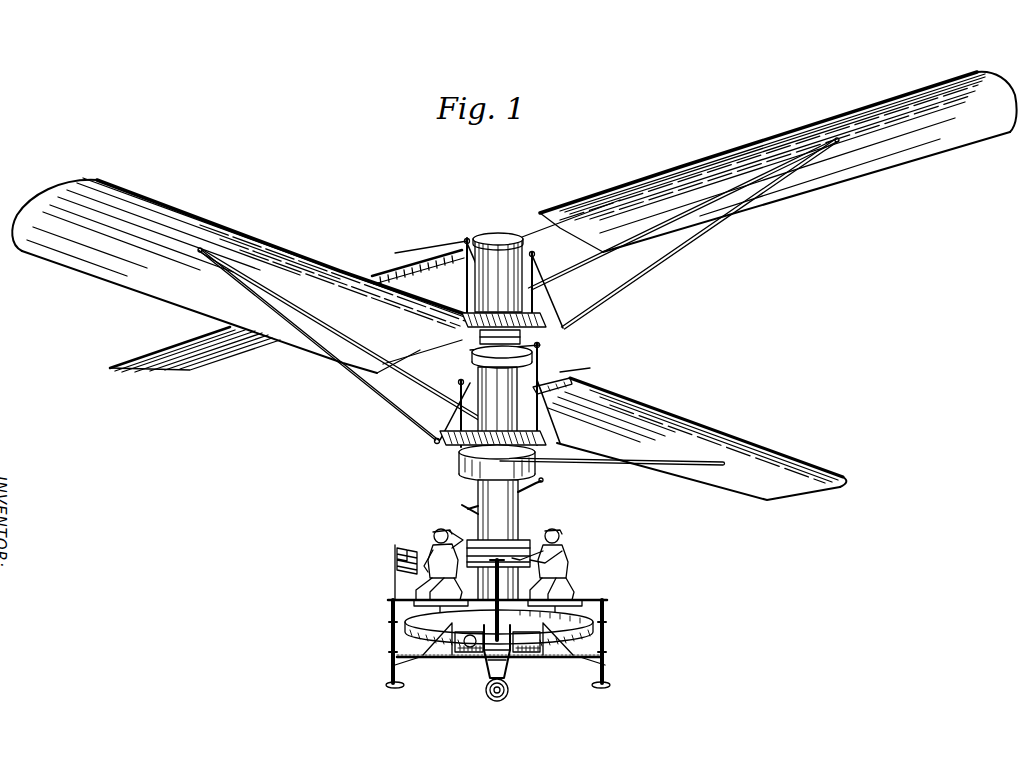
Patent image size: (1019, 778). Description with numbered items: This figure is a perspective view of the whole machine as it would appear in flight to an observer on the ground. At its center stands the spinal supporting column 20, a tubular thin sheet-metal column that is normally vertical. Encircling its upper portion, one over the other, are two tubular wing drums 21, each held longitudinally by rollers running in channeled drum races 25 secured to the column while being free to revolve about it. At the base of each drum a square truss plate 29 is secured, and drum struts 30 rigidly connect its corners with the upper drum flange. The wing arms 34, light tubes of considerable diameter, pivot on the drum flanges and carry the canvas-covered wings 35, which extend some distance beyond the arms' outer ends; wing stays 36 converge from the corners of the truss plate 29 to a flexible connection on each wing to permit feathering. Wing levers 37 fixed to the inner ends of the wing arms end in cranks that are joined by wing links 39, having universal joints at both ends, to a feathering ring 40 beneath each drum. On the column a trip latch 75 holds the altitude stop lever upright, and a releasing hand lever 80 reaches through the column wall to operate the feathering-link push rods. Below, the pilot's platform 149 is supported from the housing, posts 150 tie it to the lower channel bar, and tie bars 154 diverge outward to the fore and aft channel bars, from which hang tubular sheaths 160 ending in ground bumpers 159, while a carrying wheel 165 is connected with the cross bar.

The spinal supporting column 20 is at (498, 540).
The wing drums 21 is at (498, 336).
The drum races 25 is at (490, 235).
The truss plate 29 is at (541, 323).
The drum struts 30 is at (606, 434).
The wing arms 34 is at (455, 244).
The wings 35 is at (514, 286).
The wing stays 36 is at (585, 306).
The wing levers 37 is at (533, 228).
The wing links 39 is at (463, 242).
The feathering ring 40 is at (460, 477).
The trip latch 75 is at (544, 487).
The releasing hand lever 80 is at (466, 511).
The pilot's platform 149 is at (570, 630).
The posts 150 is at (557, 660).
The tie bars 154 is at (573, 647).
The ground bumpers 159 is at (390, 685).
The tubular sheaths 160 is at (391, 655).
The carrying wheel 165 is at (483, 665).